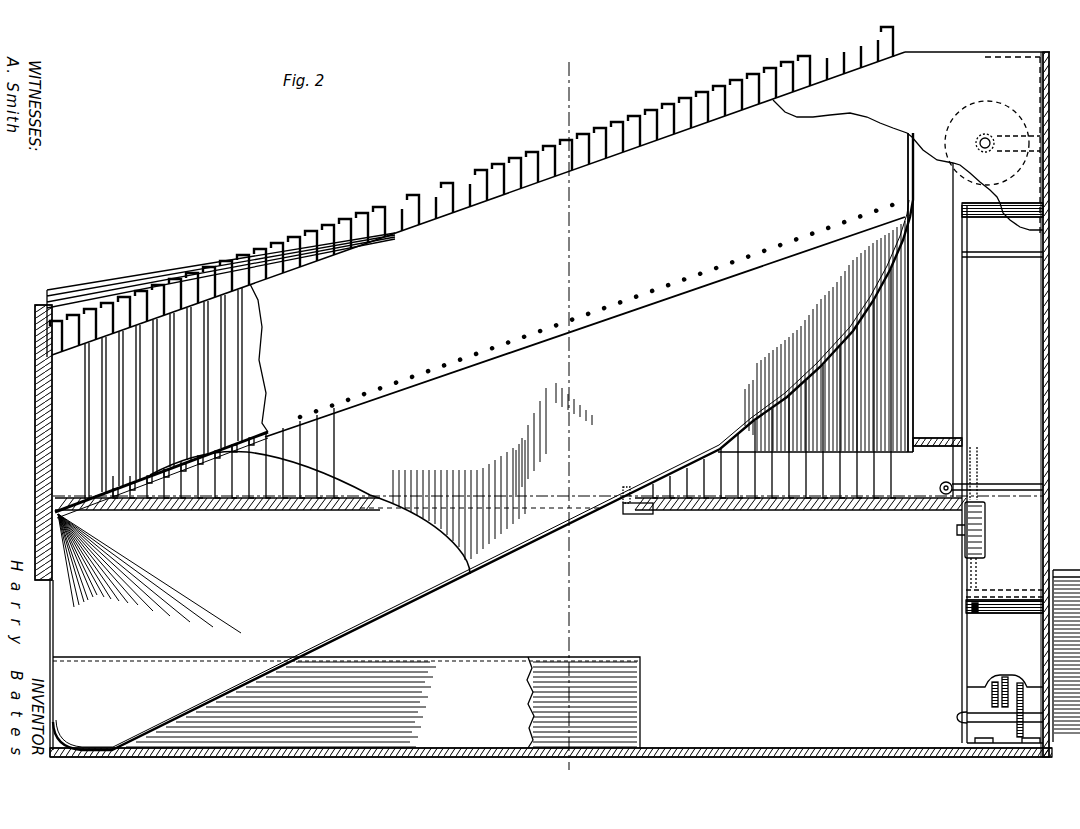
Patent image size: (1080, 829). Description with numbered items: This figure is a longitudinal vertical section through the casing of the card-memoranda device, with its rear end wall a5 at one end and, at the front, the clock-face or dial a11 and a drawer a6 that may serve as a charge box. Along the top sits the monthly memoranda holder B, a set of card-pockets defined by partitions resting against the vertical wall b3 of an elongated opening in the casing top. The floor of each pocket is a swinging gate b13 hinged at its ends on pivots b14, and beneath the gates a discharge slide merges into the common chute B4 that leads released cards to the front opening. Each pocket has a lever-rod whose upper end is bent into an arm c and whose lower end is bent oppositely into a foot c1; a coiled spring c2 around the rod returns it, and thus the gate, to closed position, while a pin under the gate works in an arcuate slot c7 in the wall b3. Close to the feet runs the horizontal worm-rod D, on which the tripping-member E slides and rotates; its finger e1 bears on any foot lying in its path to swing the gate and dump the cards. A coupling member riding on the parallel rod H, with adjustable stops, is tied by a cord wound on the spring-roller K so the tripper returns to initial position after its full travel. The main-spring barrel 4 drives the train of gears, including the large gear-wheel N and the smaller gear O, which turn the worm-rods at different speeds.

The monthly memoranda holder B is at (260, 348).
The common chute B4 is at (170, 722).
The vertical wall of elongated opening b3 is at (585, 327).
The swinging gate b13 is at (270, 428).
The gate hinges b14 is at (493, 341).
The arm c is at (742, 88).
The coiled spring c2 is at (896, 44).
The arcuate slots c7 is at (268, 437).
The feet c1 is at (306, 490).
The worm-rod D is at (300, 511).
The tripping-member E is at (648, 520).
The finger e1 is at (656, 508).
The spring-roller K is at (953, 317).
The horizontal rod H is at (962, 126).
The rear end wall a5 is at (1049, 421).
The drawer a6 is at (346, 702).
The clock-face or dial a11 is at (36, 418).
The gear O is at (965, 550).
The large gear-wheel N is at (970, 588).
The main-spring wheel or barrel 4 is at (594, 784).